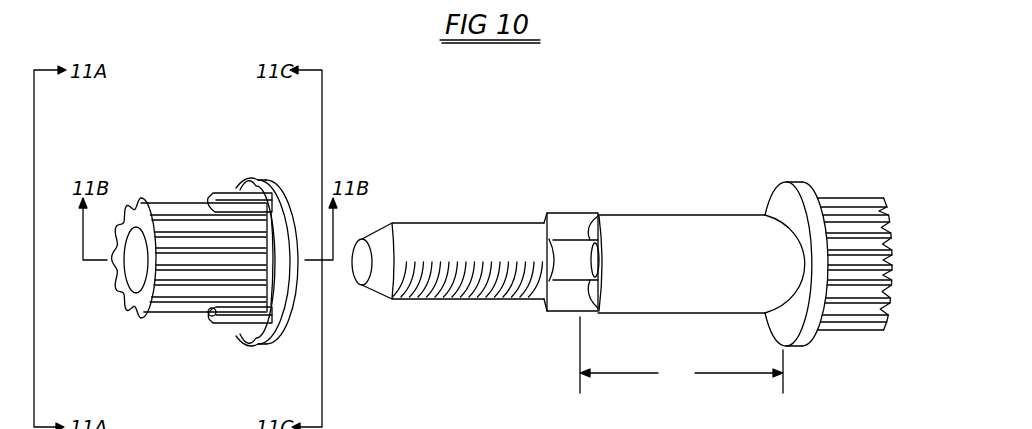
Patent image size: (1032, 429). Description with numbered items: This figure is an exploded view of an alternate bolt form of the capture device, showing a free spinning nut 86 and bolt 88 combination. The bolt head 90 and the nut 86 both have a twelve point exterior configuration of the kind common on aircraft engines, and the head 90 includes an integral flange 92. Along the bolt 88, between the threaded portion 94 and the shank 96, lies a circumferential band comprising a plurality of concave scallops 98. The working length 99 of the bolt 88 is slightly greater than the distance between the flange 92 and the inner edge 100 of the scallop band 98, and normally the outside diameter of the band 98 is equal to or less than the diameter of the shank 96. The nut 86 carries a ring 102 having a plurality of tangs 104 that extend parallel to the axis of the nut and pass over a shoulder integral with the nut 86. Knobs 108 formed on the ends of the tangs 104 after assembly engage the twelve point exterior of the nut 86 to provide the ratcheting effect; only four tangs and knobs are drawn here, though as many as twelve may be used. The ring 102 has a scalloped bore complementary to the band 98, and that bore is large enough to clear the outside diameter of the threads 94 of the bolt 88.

The nut 86 is at (168, 295).
The bolt 88 is at (722, 222).
The bolt head 90 is at (857, 200).
The flange 92 is at (807, 190).
The threaded portion 94 is at (437, 228).
The shank 96 is at (655, 222).
The scallop band 98 is at (553, 217).
The working length 99 is at (681, 355).
The inner edge 100 is at (602, 214).
The ring 102 is at (285, 312).
The tangs 104 is at (223, 198).
The knobs 108 is at (213, 313).